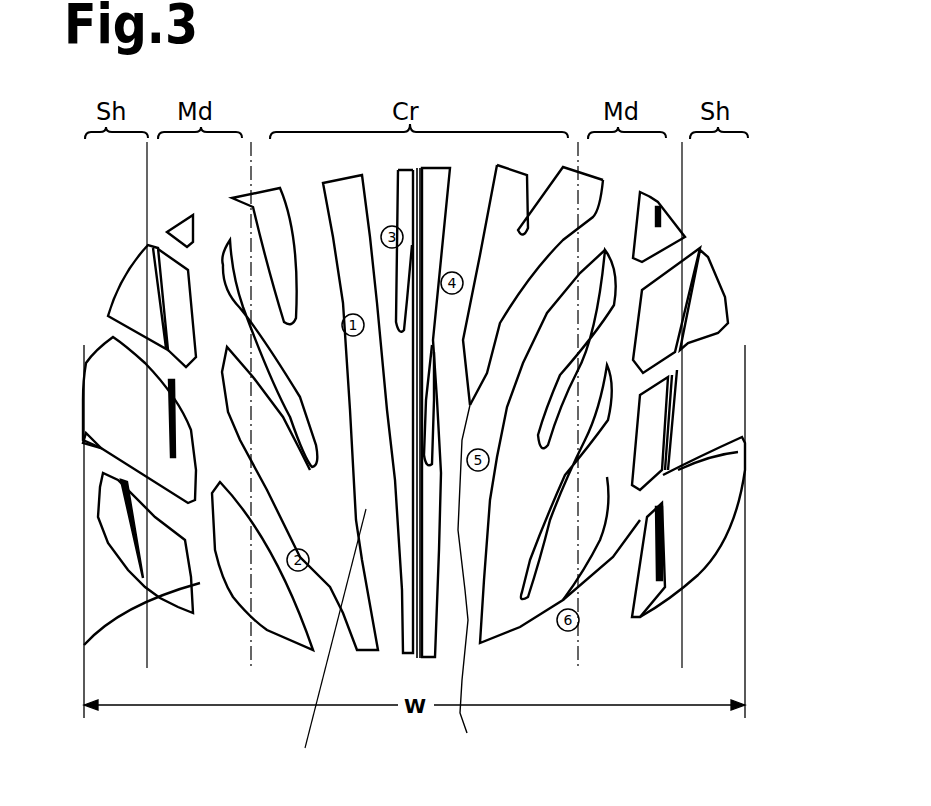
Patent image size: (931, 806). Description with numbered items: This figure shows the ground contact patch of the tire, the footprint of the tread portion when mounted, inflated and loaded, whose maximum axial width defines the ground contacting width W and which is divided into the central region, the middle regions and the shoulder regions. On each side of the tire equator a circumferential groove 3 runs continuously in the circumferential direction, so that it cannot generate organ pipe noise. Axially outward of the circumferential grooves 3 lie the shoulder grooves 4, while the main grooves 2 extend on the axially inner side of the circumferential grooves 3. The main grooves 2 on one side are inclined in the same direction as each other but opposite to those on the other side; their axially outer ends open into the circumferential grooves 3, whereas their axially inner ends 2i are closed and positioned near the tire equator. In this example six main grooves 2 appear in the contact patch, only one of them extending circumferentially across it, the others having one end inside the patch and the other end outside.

The main groove 2 is at (397, 203).
The axially inner end 2i is at (398, 343).
The circumferential groove 3 is at (627, 323).
The shoulder groove 4 is at (715, 350).